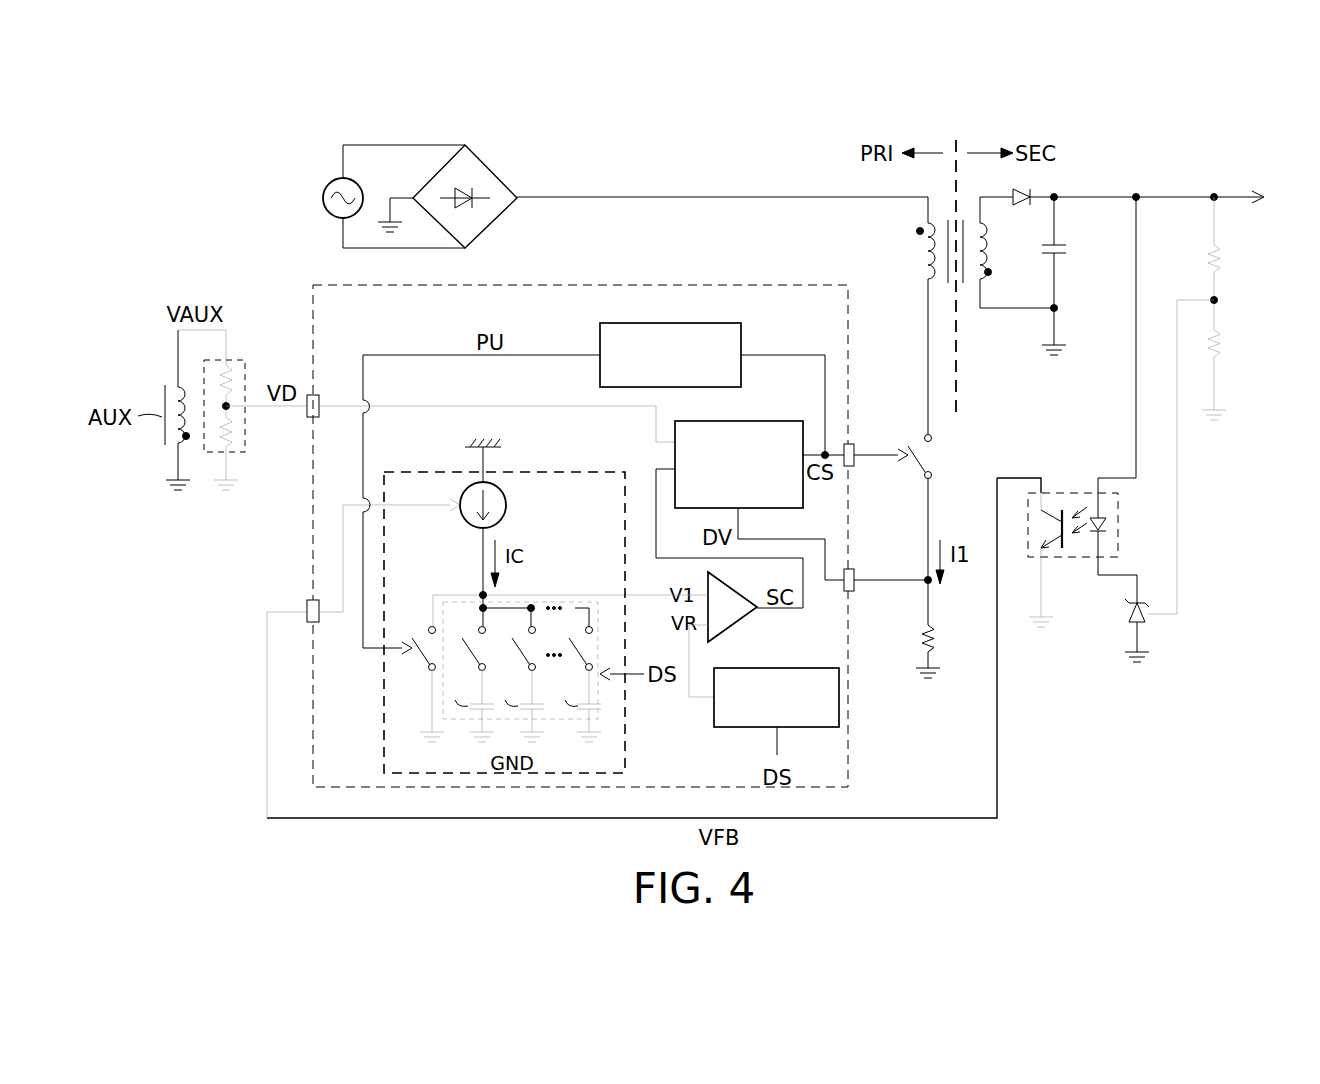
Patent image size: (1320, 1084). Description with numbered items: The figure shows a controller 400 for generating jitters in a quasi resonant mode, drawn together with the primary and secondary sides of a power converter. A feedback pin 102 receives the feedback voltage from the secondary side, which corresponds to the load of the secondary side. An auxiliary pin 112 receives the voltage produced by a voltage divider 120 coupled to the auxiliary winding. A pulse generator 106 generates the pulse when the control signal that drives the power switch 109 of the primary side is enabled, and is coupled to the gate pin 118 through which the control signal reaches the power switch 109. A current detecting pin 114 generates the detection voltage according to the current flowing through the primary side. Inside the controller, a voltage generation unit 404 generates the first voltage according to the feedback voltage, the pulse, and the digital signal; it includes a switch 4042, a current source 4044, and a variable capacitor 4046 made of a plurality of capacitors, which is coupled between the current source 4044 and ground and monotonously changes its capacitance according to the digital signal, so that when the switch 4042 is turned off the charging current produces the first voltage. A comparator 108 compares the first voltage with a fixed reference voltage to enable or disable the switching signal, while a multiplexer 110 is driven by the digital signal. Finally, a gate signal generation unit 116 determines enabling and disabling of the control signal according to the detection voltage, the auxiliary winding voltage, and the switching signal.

The controller 400 is at (632, 285).
The pulse generator 106 is at (688, 323).
The gate signal generation unit 116 is at (752, 421).
The gate pin 118 is at (870, 430).
The power switch 109 is at (933, 456).
The auxiliary pin 112 is at (310, 417).
The voltage divider 120 is at (262, 334).
The feedback pin 102 is at (307, 601).
The voltage generation unit 404 is at (560, 472).
The current source 4044 is at (507, 506).
The switch 4042 is at (412, 660).
The variable capacitor 4046 is at (598, 652).
The comparator 108 is at (740, 625).
The multiplexer 110 is at (783, 668).
The current detecting pin 114 is at (856, 590).